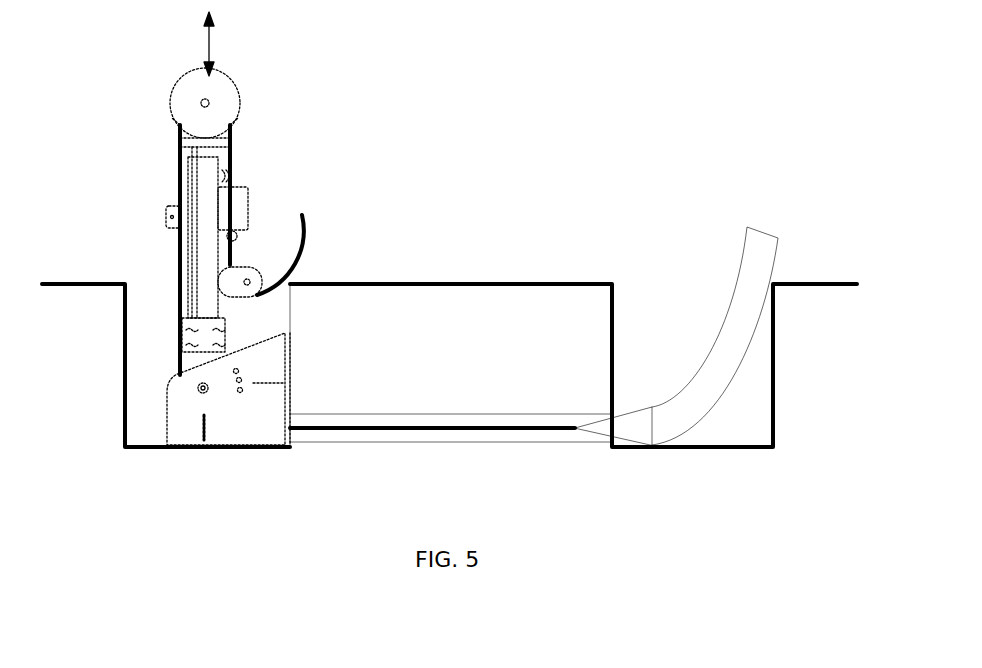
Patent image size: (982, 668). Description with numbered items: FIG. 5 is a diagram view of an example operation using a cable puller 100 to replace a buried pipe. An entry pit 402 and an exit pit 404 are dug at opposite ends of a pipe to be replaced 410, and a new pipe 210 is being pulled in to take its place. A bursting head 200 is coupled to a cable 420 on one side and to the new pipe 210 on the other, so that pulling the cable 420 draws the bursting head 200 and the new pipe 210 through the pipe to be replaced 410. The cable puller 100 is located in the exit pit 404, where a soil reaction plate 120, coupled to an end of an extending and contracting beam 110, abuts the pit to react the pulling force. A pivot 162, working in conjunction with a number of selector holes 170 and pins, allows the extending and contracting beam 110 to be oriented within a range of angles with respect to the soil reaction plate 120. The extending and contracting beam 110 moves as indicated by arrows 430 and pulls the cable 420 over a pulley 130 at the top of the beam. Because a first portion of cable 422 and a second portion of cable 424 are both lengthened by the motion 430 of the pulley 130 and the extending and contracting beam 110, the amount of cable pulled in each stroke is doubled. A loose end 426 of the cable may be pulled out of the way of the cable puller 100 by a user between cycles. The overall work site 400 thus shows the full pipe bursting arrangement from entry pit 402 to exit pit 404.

The cable puller 100 is at (275, 135).
The extending and contracting beam 110 is at (205, 250).
The soil reaction plate 120 is at (193, 417).
The pulley 130 is at (221, 108).
The pivot 162 is at (200, 387).
The selector holes 170 is at (242, 384).
The bursting head 200 is at (632, 432).
The new pipe 210 is at (762, 257).
The excavation site 400 is at (160, 542).
The entry pit 402 is at (667, 285).
The exit pit 404 is at (140, 280).
The pipe to be replaced 410 is at (430, 432).
The cable 420 is at (378, 427).
The first portion of cable 422 is at (177, 182).
The second portion of cable 424 is at (240, 177).
The loose end of the cable 426 is at (303, 243).
The arrows indicating motion 430 is at (207, 43).